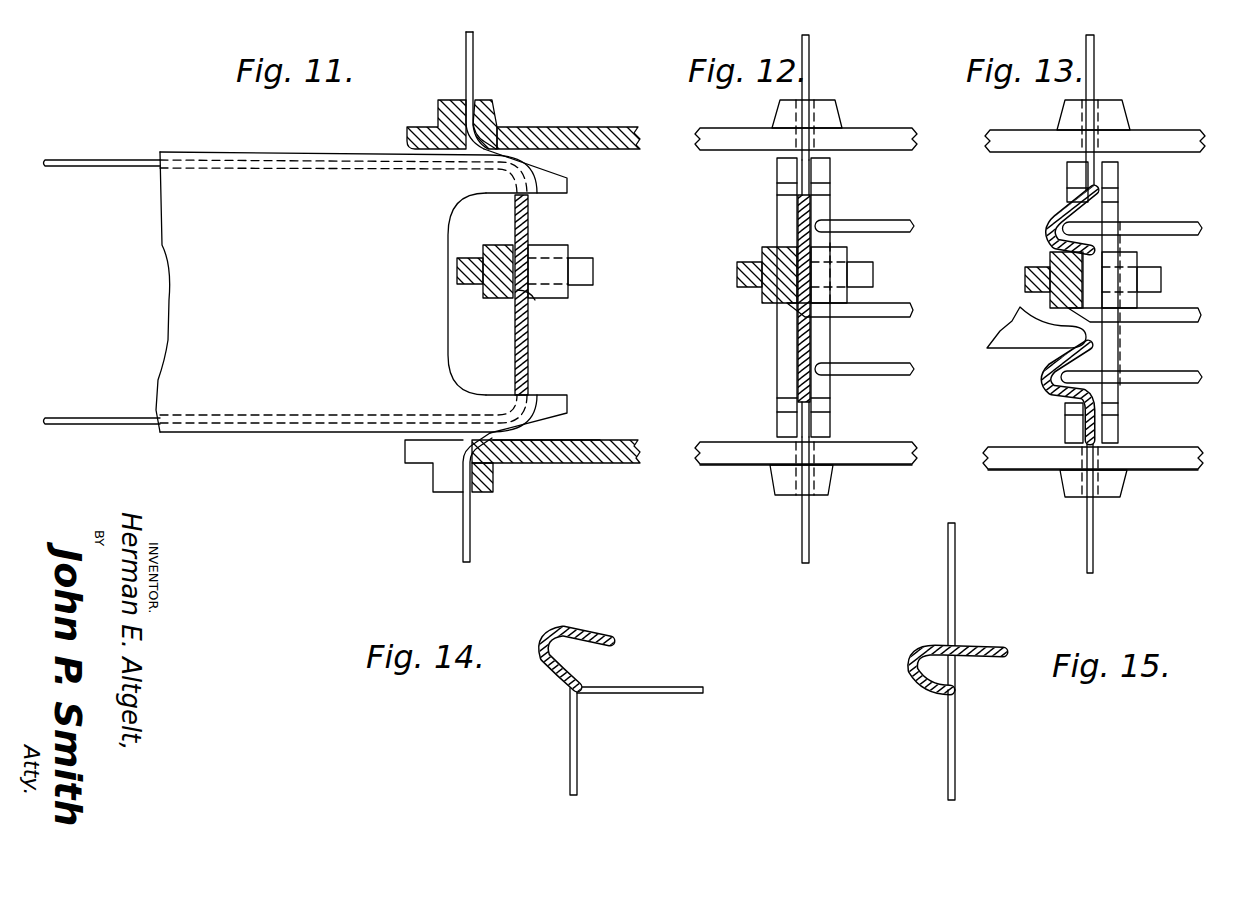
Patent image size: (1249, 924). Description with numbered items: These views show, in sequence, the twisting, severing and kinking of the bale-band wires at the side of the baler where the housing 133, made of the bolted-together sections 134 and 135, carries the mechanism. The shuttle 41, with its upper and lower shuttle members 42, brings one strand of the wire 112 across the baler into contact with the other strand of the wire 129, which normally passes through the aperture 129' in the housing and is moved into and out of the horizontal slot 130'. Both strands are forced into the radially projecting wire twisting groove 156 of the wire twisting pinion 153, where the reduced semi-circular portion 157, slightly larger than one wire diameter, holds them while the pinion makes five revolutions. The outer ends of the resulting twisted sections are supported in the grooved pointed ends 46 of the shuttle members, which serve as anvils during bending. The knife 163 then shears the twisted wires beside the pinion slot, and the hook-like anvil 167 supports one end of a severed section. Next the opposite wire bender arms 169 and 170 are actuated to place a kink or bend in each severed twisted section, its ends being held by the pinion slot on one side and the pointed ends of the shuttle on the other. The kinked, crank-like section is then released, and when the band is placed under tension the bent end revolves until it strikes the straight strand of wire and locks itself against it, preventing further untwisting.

In FIG. 11, the shuttle 41 is at (236, 398).
In FIG. 12, the shuttle 41 is at (772, 347).
In FIG. 13, the shuttle 41 is at (1058, 315).
In FIG. 11, the shuttle member 42 is at (183, 243).
In FIG. 12, the shuttle member 42 is at (785, 371).
In FIG. 13, the shuttle member 42 is at (1108, 387).
In FIG. 11, the pointed inner end 46 is at (567, 188).
In FIG. 12, the pointed inner end 46 is at (781, 173).
In FIG. 13, the pointed inner end 46 is at (1076, 175).
In FIG. 11, the wire 112 is at (131, 424).
In FIG. 14, the wire 112 is at (572, 750).
In FIG. 15, the wire 112 is at (956, 763).
In FIG. 11, the wire 129 is at (503, 90).
In FIG. 14, the wire 129 is at (623, 662).
In FIG. 15, the wire 129 is at (962, 606).
In FIG. 11, the aperture 129' is at (420, 124).
In FIG. 12, the aperture 129' is at (832, 114).
In FIG. 11, the slot 130' is at (482, 466).
In FIG. 12, the slot 130' is at (784, 495).
In FIG. 11, the housing 133 is at (588, 474).
In FIG. 12, the housing 133 is at (710, 474).
In FIG. 13, the housing 133 is at (1010, 463).
In FIG. 11, the housing section 134 is at (601, 128).
In FIG. 11, the housing section 135 is at (545, 445).
In FIG. 11, the wire twisting pinion 153 is at (582, 258).
In FIG. 12, the wire twisting pinion 153 is at (744, 258).
In FIG. 13, the wire twisting pinion 153 is at (1026, 265).
In FIG. 11, the wire twisting groove 156 is at (580, 278).
In FIG. 12, the wire twisting groove 156 is at (862, 273).
In FIG. 13, the wire twisting groove 156 is at (1150, 281).
In FIG. 11, the semi-circular portion 157 is at (535, 300).
In FIG. 12, the knife 163 is at (898, 304).
In FIG. 13, the knife 163 is at (1188, 322).
In FIG. 13, the anvil 167 is at (1010, 323).
In FIG. 12, the wire bender arm 169 is at (895, 377).
In FIG. 13, the wire bender arm 169 is at (1192, 384).
In FIG. 12, the wire bender arm 170 is at (889, 222).
In FIG. 13, the wire bender arm 170 is at (1165, 223).